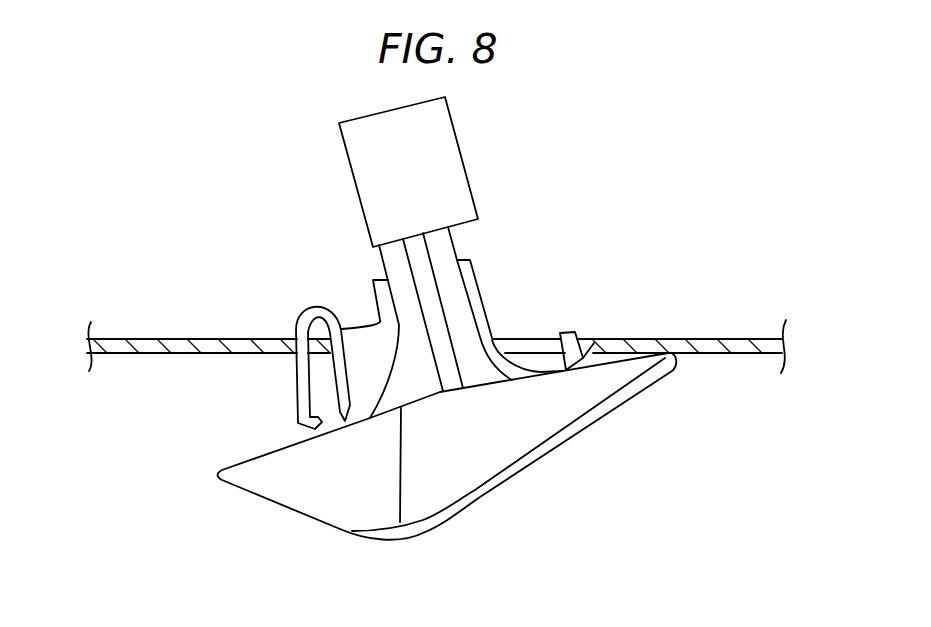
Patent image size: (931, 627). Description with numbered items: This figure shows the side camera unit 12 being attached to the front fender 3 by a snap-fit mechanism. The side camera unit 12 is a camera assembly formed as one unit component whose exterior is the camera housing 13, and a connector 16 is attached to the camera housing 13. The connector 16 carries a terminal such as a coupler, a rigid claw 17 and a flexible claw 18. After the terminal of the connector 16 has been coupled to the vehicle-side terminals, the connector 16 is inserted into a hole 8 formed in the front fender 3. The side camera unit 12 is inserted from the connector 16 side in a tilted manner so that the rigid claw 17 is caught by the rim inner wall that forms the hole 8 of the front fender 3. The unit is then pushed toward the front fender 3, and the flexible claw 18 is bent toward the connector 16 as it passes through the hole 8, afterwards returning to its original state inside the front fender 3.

The front fender 3 is at (142, 354).
The hole 8 is at (529, 344).
The side camera unit 12 is at (311, 532).
The camera housing 13 is at (480, 502).
The connector 16 is at (481, 169).
The rigid claw 17 is at (573, 331).
The flexible claw 18 is at (297, 397).